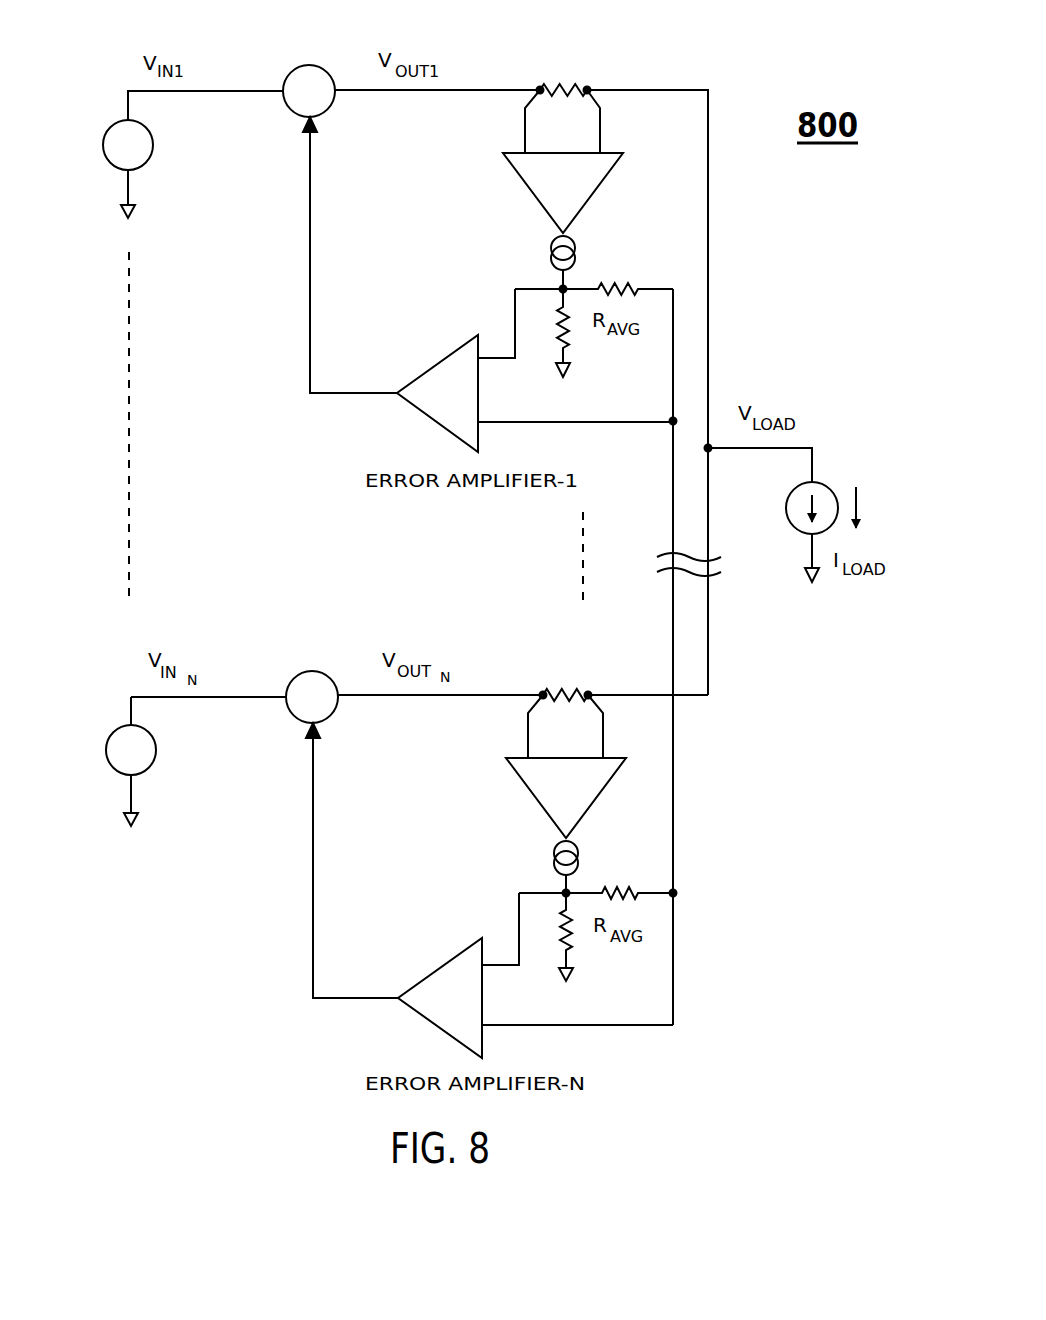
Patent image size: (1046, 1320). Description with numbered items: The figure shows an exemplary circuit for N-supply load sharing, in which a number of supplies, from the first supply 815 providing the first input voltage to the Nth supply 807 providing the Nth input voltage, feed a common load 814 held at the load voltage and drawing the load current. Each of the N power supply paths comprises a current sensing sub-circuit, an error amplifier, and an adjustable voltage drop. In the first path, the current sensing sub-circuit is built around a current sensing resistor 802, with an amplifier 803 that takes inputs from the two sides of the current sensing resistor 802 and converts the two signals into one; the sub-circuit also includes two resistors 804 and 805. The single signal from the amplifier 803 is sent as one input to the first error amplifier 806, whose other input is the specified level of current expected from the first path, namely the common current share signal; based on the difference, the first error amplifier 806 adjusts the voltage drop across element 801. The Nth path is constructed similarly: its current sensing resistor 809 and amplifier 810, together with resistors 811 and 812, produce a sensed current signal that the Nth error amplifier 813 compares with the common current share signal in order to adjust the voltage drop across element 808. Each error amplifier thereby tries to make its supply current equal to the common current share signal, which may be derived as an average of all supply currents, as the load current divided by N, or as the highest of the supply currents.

The adjustable voltage drop element 801 is at (287, 73).
The current sensing resistor 802 is at (570, 72).
The amplifier 803 is at (533, 202).
The resistor 804 is at (592, 343).
The resistor 805 is at (618, 273).
The error amplifier-1 806 is at (427, 368).
The supply 807 is at (106, 750).
The adjustable voltage drop element 808 is at (289, 678).
The current sensing resistor 809 is at (574, 679).
The amplifier 810 is at (537, 808).
The resistor 811 is at (552, 940).
The resistor 812 is at (621, 878).
The error amplifier-N 813 is at (430, 973).
The common load 814 is at (797, 527).
The supply 815 is at (103, 145).